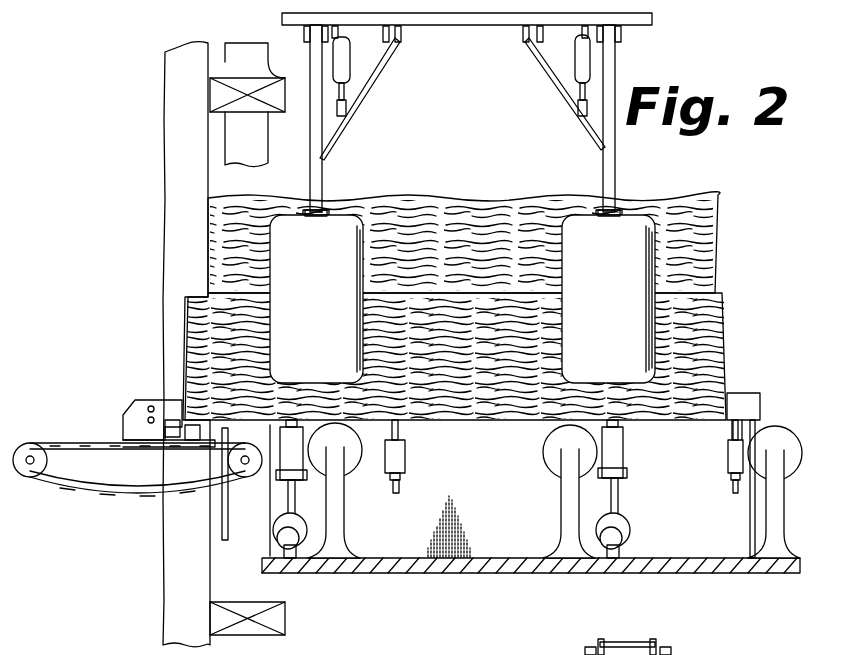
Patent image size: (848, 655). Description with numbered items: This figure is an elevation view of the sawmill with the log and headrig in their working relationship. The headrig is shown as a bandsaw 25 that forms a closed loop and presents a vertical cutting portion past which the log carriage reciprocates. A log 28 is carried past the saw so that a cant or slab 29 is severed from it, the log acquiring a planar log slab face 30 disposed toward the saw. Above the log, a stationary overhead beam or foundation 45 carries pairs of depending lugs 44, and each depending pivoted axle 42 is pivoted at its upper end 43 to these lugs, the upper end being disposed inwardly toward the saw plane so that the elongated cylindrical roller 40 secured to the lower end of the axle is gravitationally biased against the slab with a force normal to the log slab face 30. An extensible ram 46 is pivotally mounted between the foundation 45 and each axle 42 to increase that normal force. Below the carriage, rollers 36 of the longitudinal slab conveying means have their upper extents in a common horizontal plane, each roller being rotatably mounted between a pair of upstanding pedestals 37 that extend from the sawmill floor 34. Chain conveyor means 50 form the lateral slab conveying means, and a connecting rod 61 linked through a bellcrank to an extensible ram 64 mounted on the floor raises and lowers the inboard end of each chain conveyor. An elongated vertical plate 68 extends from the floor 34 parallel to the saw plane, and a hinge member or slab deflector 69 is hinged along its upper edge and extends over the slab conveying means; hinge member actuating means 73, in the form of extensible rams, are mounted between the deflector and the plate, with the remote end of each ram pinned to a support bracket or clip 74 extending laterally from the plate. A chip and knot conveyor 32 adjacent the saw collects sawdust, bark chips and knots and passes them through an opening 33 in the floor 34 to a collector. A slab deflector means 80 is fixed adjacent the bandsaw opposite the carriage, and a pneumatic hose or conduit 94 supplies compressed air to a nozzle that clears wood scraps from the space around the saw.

The bandsaw 25 is at (178, 138).
The log 28 is at (478, 212).
The cant or slab 29 is at (696, 332).
The log slab face 30 is at (494, 286).
The chip and knot conveyor 32 is at (86, 442).
The opening 33 is at (244, 583).
The sawmill floor 34 is at (560, 558).
The rollers 36 is at (553, 440).
The upstanding pedestals 37 is at (344, 477).
The elongated cylindrical rollers 40 is at (340, 285).
The depending pivoted axle 42 is at (322, 182).
The upper end of axle 43 is at (308, 86).
The depending lugs 44 is at (304, 40).
The overhead beam or foundation 45 is at (470, 26).
The extensible ram 46 is at (352, 62).
The chain conveyor means 50 is at (278, 444).
The connecting rod 61 is at (288, 498).
The extensible ram 64 is at (315, 525).
The elongated vertical plate 68 is at (738, 549).
The hinge member or slab deflector 69 is at (738, 392).
The hinge member actuating means 73 is at (405, 454).
The support bracket or clip 74 is at (401, 486).
The slab deflector means 80 is at (153, 397).
The pneumatic hose or conduit 94 is at (222, 522).